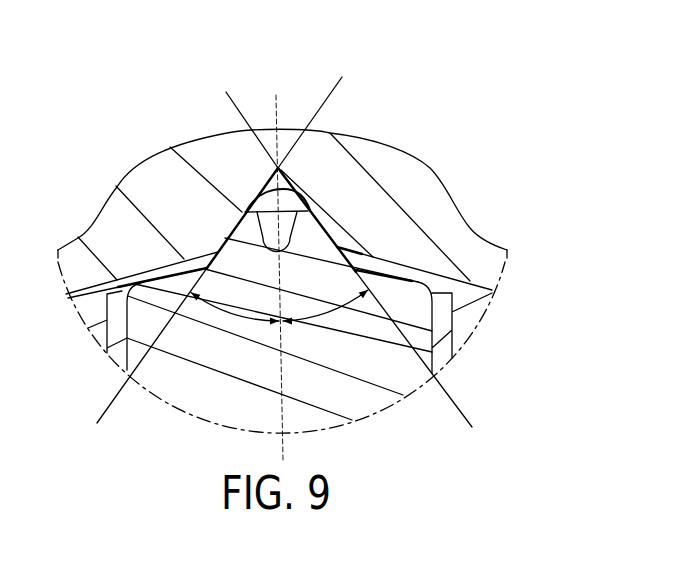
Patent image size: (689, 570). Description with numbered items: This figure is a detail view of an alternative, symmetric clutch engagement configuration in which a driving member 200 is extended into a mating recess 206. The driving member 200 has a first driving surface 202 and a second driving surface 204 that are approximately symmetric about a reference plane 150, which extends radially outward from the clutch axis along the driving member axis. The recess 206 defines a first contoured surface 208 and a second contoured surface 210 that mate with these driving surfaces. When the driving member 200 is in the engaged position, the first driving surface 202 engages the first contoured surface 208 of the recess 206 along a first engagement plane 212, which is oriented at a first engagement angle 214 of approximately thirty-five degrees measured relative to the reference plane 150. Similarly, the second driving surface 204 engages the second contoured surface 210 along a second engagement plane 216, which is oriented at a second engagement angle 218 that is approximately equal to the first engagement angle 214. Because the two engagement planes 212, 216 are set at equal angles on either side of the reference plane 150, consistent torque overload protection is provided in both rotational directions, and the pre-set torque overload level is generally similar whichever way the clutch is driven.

The reference plane 150 is at (283, 447).
The driving member 200 is at (238, 404).
The first driving surface 202 is at (220, 256).
The second driving surface 204 is at (343, 258).
The mating recess 206 is at (263, 184).
The first contoured surface 208 is at (232, 233).
The second contoured surface 210 is at (320, 222).
The first engagement plane 212 is at (338, 80).
The first engagement angle 214 is at (215, 308).
The second engagement plane 216 is at (228, 95).
The second engagement angle 218 is at (308, 320).